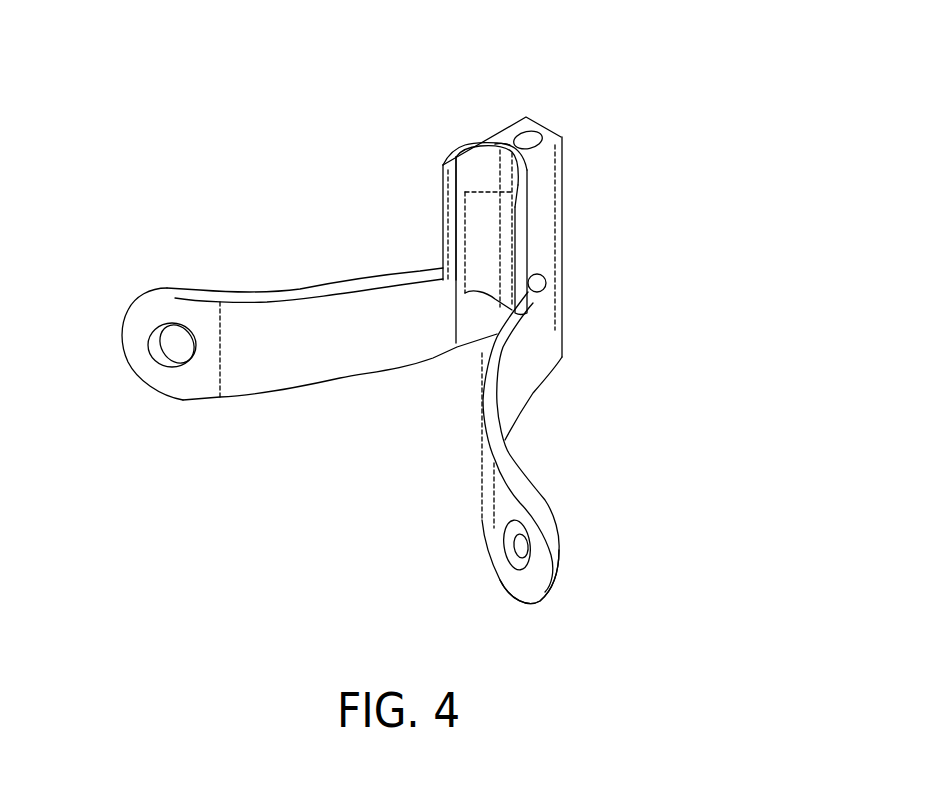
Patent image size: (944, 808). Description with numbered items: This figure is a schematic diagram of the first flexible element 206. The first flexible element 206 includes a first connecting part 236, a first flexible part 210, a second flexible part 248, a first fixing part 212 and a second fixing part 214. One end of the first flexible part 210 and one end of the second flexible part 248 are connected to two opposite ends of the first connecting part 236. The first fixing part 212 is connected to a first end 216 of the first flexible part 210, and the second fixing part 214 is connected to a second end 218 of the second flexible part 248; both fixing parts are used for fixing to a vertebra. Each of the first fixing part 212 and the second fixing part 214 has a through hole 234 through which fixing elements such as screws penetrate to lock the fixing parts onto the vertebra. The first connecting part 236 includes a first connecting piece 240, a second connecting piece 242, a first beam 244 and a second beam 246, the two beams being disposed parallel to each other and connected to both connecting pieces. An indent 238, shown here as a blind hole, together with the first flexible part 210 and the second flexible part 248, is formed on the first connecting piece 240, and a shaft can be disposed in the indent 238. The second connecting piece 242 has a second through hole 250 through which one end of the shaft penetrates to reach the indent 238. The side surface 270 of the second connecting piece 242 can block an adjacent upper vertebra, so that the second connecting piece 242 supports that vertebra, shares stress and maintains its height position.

The first flexible element 206 is at (740, 44).
The first flexible part 210 is at (540, 363).
The first fixing part 212 is at (527, 585).
The second fixing part 214 is at (185, 290).
The first end 216 is at (462, 508).
The second end 218 is at (242, 282).
The through hole 234 is at (177, 345).
The first connecting part 236 is at (592, 167).
The indent 238 is at (545, 278).
The first connecting piece 240 is at (533, 290).
The second connecting piece 242 is at (552, 153).
The first beam 244 is at (523, 252).
The second beam 246 is at (443, 178).
The second flexible part 248 is at (285, 292).
The second through hole 250 is at (532, 138).
The side surface 270 is at (507, 128).